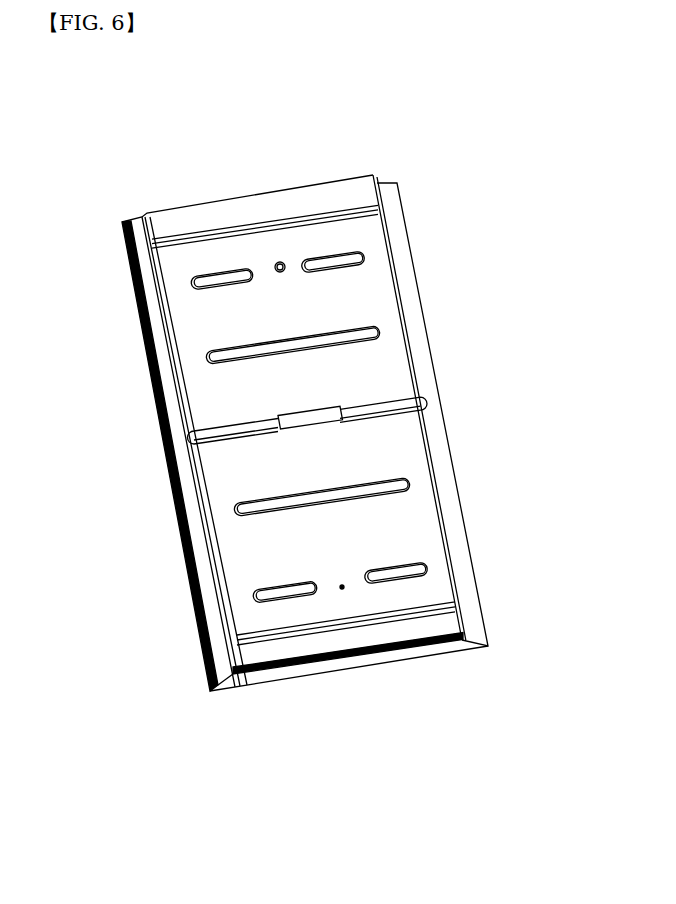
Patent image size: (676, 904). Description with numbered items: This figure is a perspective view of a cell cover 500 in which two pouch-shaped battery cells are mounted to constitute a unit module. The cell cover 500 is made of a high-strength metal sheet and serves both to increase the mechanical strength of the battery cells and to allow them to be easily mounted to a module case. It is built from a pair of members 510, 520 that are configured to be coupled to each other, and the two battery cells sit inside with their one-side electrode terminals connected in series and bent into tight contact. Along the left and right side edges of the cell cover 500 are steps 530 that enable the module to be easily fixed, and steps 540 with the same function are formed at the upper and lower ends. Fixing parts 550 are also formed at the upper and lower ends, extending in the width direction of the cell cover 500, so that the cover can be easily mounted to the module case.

The cell cover 500 is at (90, 115).
The member 510 is at (268, 672).
The member 520 is at (345, 670).
The step 530 is at (199, 557).
The step 540 is at (294, 205).
The fixing part 550 is at (435, 600).